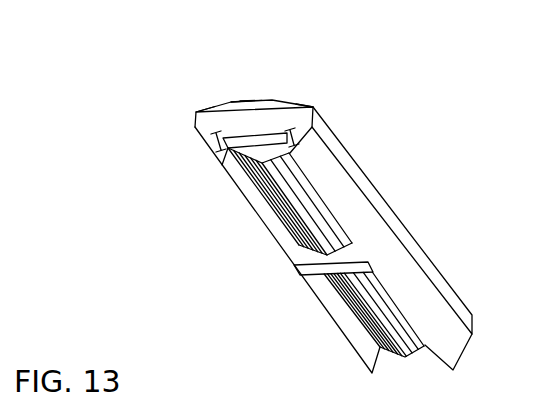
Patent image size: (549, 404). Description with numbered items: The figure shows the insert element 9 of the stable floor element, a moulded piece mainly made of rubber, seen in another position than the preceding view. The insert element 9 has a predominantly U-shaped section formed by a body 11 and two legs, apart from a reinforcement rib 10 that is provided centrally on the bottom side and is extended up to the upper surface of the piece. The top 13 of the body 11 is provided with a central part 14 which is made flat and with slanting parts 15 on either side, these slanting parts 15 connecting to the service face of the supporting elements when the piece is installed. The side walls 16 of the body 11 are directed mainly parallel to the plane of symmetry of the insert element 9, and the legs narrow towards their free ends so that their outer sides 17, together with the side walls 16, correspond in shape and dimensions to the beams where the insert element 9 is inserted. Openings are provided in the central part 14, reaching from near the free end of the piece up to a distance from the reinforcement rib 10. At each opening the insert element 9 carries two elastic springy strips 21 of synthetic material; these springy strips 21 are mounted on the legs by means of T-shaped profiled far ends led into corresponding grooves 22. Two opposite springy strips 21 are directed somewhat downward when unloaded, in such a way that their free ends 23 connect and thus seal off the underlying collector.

The insert element 9 is at (453, 223).
The reinforcement rib 10 is at (310, 260).
The body 11 is at (259, 110).
The top 13 is at (231, 101).
The central part 14 is at (247, 100).
The slanting parts 15 is at (207, 108).
The side walls 16 is at (318, 127).
The outer sides 17 is at (337, 177).
The springy strips 21 is at (290, 184).
The grooves 22 is at (195, 127).
The free ends 23 is at (302, 225).